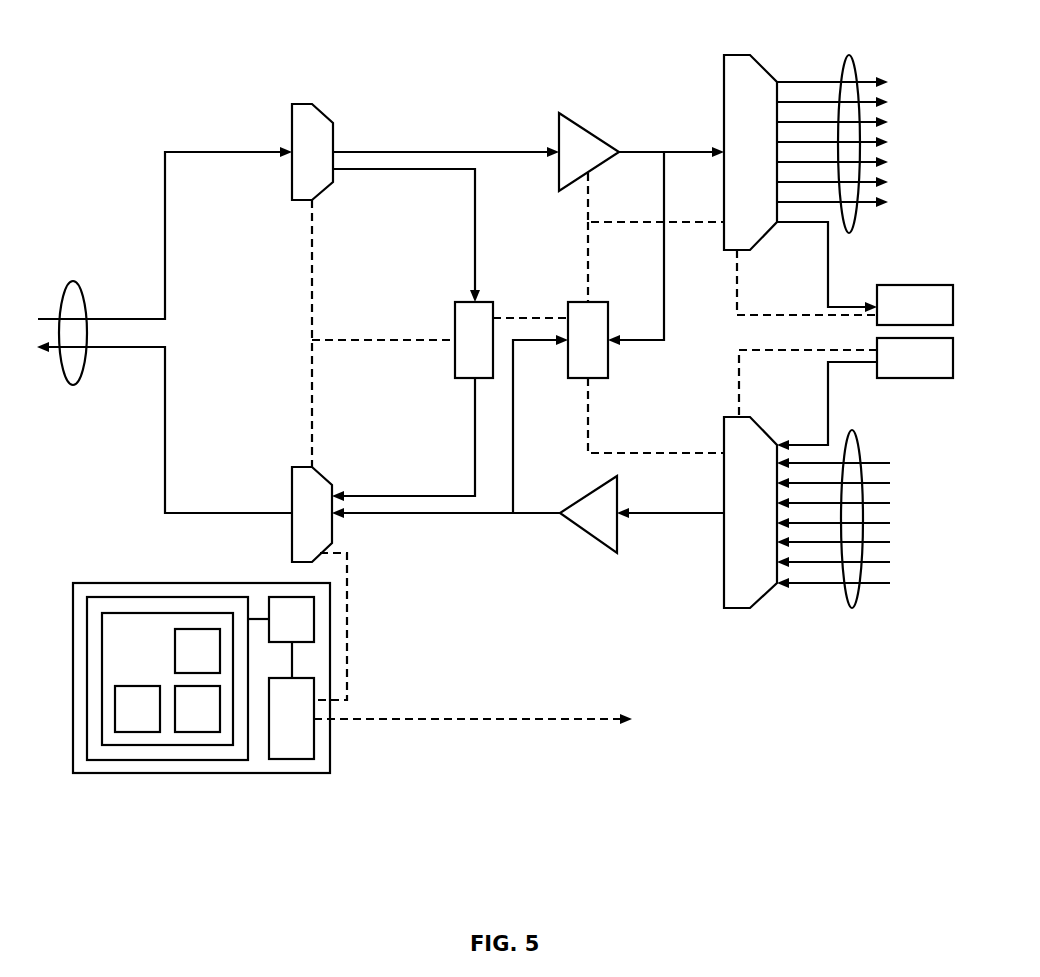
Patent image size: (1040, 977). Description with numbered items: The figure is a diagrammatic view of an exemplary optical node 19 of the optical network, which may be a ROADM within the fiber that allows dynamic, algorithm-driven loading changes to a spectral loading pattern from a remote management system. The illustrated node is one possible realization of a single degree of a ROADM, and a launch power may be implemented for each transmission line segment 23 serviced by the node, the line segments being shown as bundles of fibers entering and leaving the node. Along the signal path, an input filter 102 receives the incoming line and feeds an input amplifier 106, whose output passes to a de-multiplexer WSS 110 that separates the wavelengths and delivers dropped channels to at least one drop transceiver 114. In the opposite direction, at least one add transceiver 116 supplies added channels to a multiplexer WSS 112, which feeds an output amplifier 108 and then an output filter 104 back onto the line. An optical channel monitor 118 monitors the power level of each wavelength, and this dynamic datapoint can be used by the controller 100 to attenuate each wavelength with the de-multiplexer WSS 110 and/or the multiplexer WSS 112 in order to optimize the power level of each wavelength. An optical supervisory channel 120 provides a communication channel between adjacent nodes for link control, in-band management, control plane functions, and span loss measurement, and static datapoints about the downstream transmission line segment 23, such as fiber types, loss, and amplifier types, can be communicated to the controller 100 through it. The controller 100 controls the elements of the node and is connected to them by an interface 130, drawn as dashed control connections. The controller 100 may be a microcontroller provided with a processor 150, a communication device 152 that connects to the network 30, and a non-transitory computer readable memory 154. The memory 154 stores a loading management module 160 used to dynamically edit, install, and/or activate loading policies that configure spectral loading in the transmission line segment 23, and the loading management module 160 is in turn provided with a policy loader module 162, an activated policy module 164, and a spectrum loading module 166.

The optical node 19 is at (85, 62).
The transmission line segment 23 is at (73, 385).
The network 30 is at (478, 719).
The controller 100 is at (330, 735).
The input filter 102 is at (313, 104).
The output filter 104 is at (312, 467).
The input amplifier 106 is at (597, 130).
The output amplifier 108 is at (592, 536).
The de-multiplexer WSS 110 is at (806, 185).
The multiplexer WSS 112 is at (807, 512).
The drop transceiver 114 is at (915, 305).
The add transceiver 116 is at (846, 394).
The optical channel monitor 118 is at (608, 365).
The optical supervisory channel 120 is at (465, 302).
The interface 130 is at (347, 618).
The processor 150 is at (291, 637).
The communication device 152 is at (291, 718).
The non-transitory computer readable memory 154 is at (168, 597).
The loading management module 160 is at (167, 679).
The policy loader module 162 is at (197, 651).
The activated policy module 164 is at (137, 709).
The spectrum loading module 166 is at (197, 709).